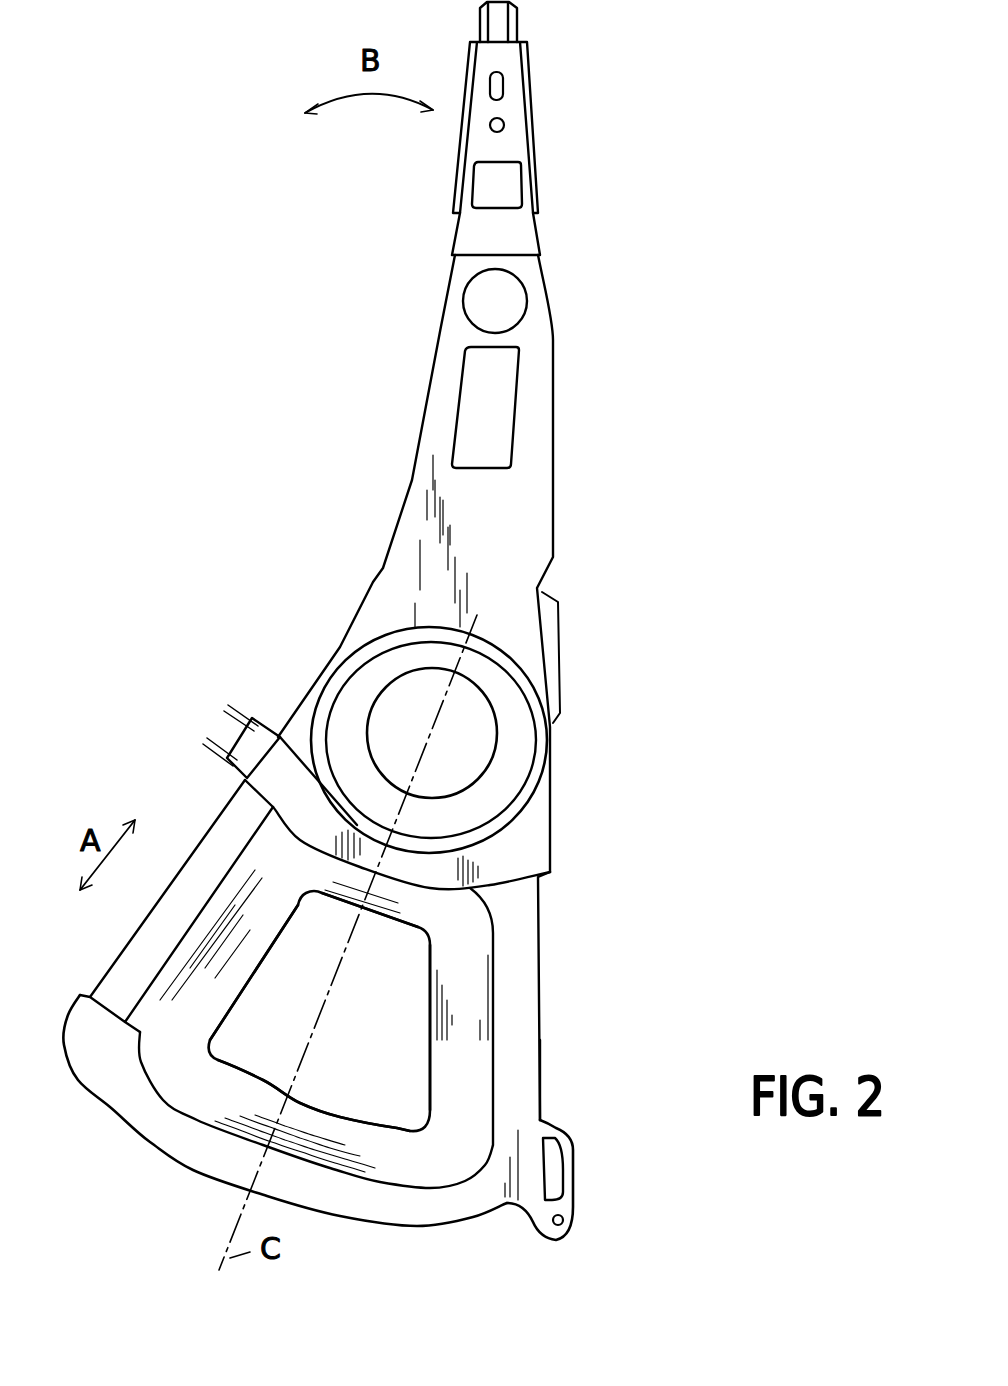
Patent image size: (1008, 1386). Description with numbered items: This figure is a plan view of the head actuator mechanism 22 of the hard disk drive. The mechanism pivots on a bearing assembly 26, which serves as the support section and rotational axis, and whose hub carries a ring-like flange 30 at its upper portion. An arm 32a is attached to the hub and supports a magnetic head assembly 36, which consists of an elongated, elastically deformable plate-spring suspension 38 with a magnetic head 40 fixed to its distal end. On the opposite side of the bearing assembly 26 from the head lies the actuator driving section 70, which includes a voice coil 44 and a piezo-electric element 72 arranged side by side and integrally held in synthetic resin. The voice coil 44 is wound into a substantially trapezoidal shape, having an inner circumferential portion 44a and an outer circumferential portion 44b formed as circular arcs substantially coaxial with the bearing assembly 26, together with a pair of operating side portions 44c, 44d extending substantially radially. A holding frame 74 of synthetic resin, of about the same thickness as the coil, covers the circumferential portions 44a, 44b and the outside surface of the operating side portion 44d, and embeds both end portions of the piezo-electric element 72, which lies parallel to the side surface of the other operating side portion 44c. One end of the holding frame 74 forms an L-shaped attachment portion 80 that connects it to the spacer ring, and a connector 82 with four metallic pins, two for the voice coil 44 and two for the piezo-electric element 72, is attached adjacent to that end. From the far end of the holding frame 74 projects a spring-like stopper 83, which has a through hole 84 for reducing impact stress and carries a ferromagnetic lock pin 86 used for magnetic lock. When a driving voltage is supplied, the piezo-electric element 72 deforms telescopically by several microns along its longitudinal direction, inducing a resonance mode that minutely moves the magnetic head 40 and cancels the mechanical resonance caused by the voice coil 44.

The head actuator mechanism 22 is at (583, 621).
The bearing assembly 26 is at (363, 644).
The ring-like flange 30 is at (508, 767).
The arm 32a is at (530, 438).
The magnetic head assembly 36 is at (443, 195).
The suspension 38 is at (512, 143).
The magnetic head 40 is at (500, 20).
The voice coil 44 is at (465, 1005).
The inner circumferential portion 44a is at (397, 895).
The outer circumferential portion 44b is at (380, 1153).
The operating side portion 44c is at (228, 972).
The operating side portion 44d is at (448, 1092).
The actuator driving section 70 is at (555, 940).
The piezo-electric element 72 is at (133, 958).
The holding frame 74 is at (528, 1082).
The attachment portion 80 is at (548, 858).
The connector 82 is at (263, 730).
The stopper 83 is at (575, 1188).
The through hole 84 is at (565, 1157).
The lock pin 86 is at (572, 1225).